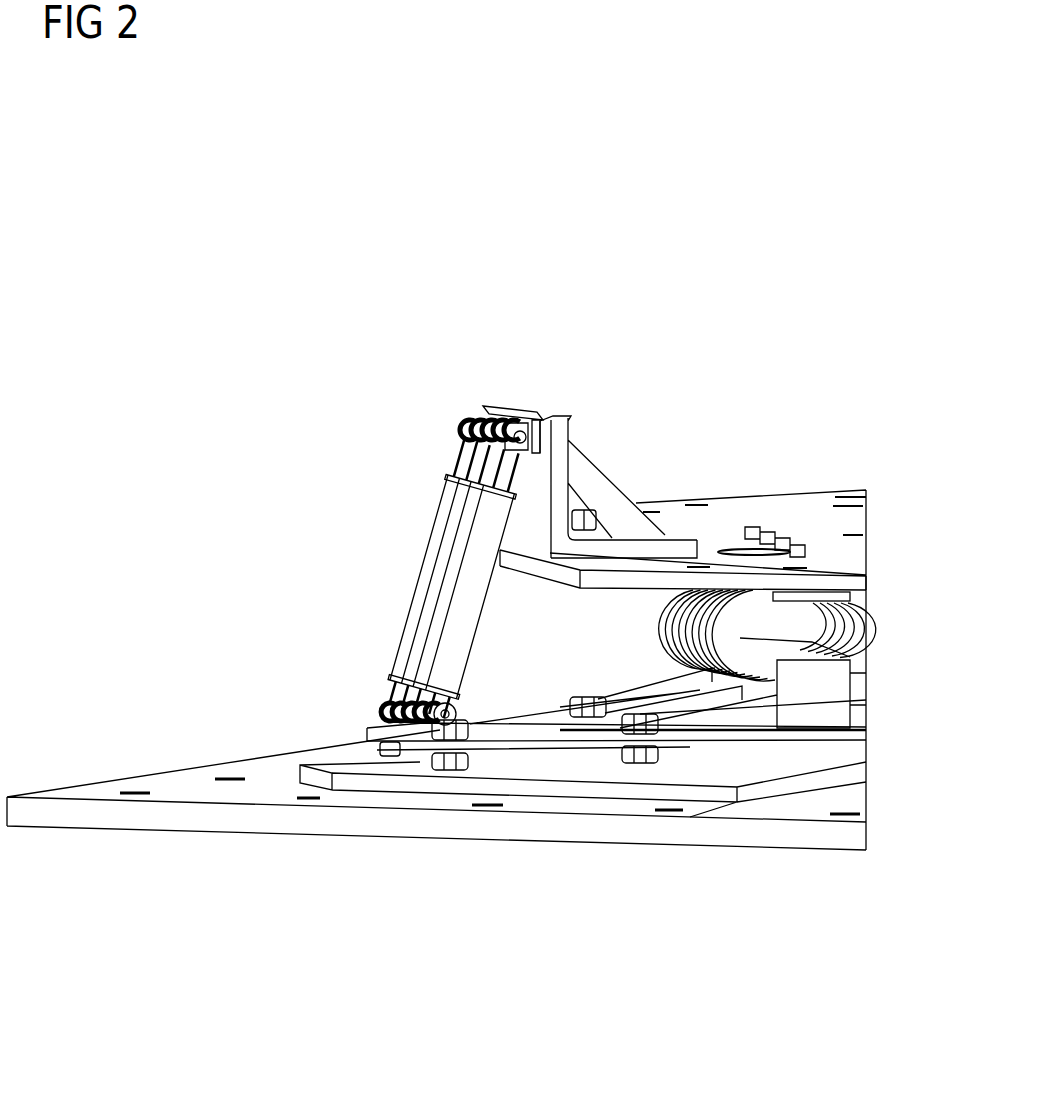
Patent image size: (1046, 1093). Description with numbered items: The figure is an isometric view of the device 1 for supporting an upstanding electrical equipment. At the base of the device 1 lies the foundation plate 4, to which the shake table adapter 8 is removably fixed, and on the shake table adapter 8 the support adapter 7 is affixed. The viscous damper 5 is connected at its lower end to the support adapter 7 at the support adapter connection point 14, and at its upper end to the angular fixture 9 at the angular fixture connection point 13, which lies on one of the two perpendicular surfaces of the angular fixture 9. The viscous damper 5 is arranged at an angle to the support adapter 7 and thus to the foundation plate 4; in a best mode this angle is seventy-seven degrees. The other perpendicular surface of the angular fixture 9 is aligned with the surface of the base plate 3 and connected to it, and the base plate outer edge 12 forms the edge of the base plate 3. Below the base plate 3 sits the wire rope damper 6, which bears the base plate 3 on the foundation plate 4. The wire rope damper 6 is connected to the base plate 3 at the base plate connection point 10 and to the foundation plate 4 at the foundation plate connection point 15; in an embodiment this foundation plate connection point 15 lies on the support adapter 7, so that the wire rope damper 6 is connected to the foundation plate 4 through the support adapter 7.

The device 1 is at (760, 922).
The base plate 3 is at (725, 502).
The foundation plate 4 is at (187, 787).
The viscous damper 5 is at (448, 493).
The wire rope damper 6 is at (680, 637).
The support adapter 7 is at (370, 736).
The shake table adapter 8 is at (330, 763).
The angular fixture 9 is at (560, 462).
The base plate connection point 10 is at (837, 597).
The base plate outer edge 12 is at (573, 578).
The angular fixture connection point 13 is at (517, 423).
The support adapter connection point 14 is at (383, 705).
The foundation plate connection point 15 is at (819, 733).